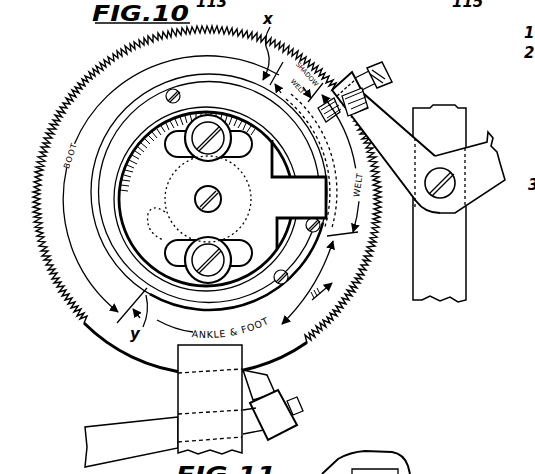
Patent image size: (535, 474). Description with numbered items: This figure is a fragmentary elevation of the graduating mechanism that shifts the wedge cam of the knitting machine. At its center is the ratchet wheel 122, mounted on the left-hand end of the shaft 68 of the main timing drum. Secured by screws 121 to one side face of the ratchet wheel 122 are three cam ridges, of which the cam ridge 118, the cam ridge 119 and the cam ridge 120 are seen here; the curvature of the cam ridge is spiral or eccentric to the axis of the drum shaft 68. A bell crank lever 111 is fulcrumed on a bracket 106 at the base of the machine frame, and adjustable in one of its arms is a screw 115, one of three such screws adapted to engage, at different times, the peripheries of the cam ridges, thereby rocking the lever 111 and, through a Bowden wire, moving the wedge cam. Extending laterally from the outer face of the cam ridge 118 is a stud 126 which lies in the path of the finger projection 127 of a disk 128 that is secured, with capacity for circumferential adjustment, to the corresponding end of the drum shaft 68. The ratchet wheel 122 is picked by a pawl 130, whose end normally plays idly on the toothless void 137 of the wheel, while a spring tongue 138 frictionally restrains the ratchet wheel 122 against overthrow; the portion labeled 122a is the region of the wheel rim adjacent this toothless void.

The cam ridge 120 is at (118, 115).
The screws 121 is at (165, 95).
The cam ridge 119 is at (262, 86).
The cam ridge 118 is at (297, 140).
The finger projection 127 is at (317, 190).
The shaft 68 is at (147, 224).
The stud 126 is at (312, 214).
The disk 128 is at (123, 255).
The ratchet wheel 122 is at (304, 60).
The screw 115 is at (388, 76).
The bell crank lever 111 is at (480, 136).
The lever end 122a is at (310, 342).
The bracket 106 is at (437, 300).
The spring tongue 138 is at (193, 387).
The pawl 130 is at (110, 437).
The toothless void 137 is at (270, 363).